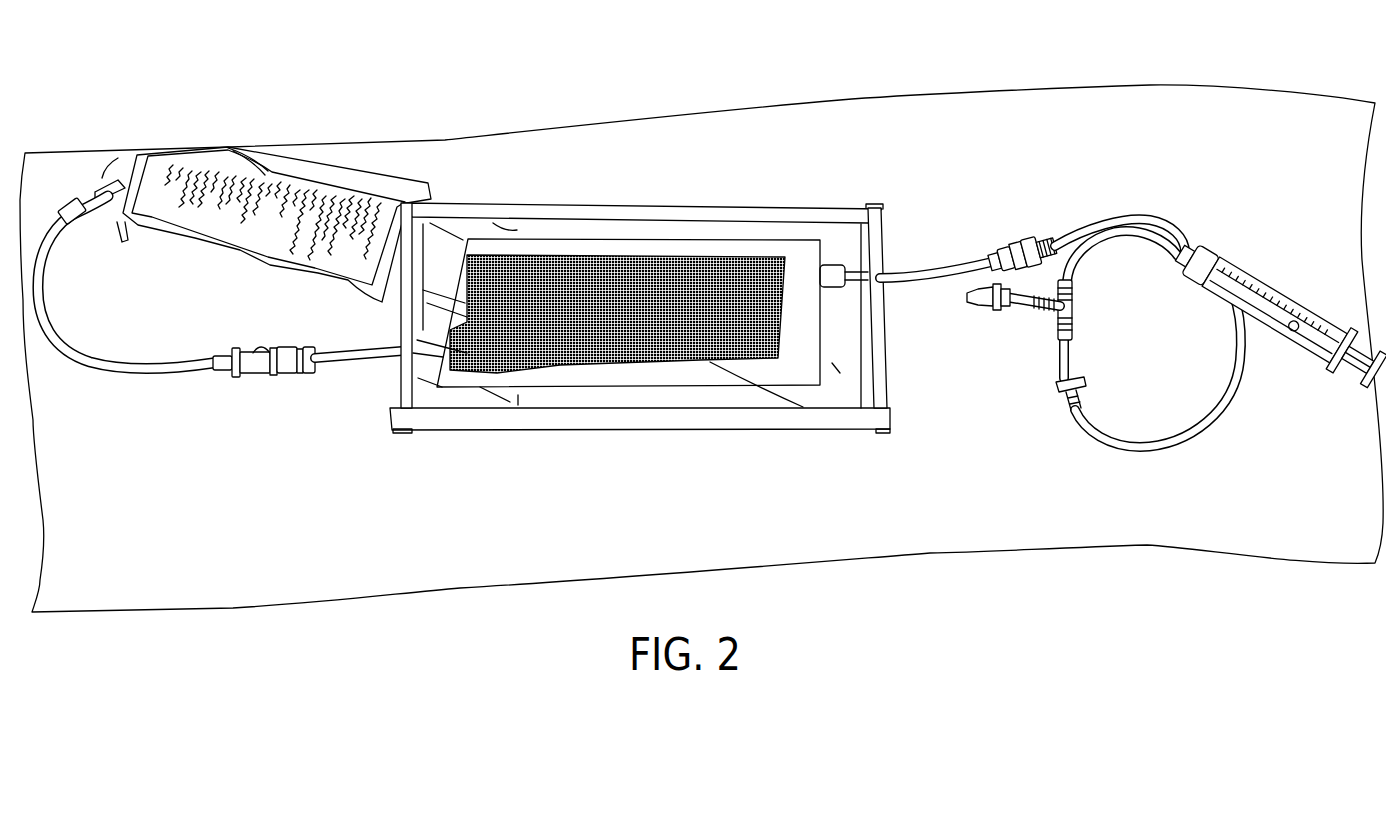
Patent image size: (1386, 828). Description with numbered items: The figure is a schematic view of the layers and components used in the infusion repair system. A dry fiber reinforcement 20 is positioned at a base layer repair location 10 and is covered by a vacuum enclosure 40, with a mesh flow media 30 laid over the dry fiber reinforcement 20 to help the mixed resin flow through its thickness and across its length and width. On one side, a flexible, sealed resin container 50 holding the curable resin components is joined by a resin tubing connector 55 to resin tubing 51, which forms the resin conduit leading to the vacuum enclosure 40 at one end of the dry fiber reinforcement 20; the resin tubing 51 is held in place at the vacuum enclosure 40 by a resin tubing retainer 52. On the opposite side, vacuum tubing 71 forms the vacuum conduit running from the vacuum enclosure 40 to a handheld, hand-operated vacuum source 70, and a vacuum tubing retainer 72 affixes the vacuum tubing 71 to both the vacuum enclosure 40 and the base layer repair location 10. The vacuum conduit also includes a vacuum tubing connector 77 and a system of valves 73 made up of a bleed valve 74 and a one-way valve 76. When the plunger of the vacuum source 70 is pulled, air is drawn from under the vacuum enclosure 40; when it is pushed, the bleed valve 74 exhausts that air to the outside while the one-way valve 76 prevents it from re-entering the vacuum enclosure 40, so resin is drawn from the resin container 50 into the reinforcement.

The base layer repair location 10 is at (422, 593).
The dry fiber reinforcement 20 is at (540, 383).
The mesh flow media 30 is at (663, 260).
The vacuum enclosure 40 is at (828, 390).
The flexible, sealed resin container 50 is at (359, 134).
The resin tubing 51 is at (328, 362).
The resin tubing retainer 52 is at (405, 360).
The resin tubing connector 55 is at (257, 372).
The vacuum source 70 is at (1260, 280).
The vacuum tubing 71 is at (933, 267).
The vacuum tubing retainer 72 is at (875, 253).
The system of valves 73 is at (1040, 332).
The bleed valve 74 is at (999, 312).
The one-way valve 76 is at (1060, 405).
The vacuum tubing connector 77 is at (1015, 236).